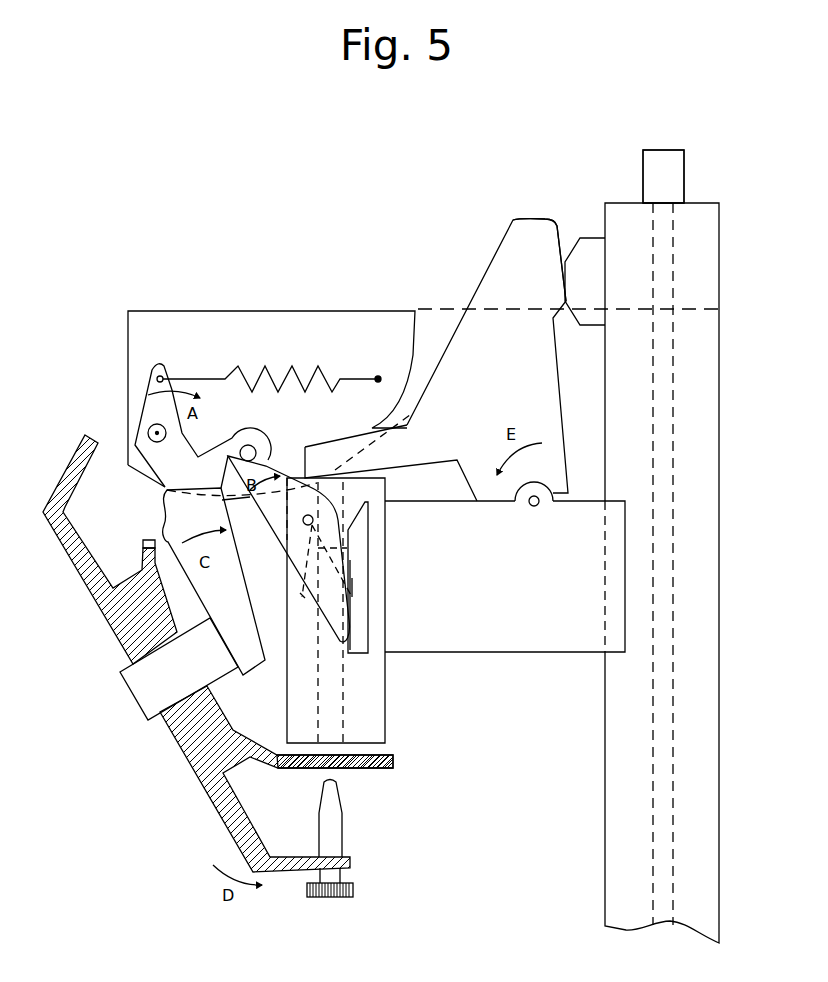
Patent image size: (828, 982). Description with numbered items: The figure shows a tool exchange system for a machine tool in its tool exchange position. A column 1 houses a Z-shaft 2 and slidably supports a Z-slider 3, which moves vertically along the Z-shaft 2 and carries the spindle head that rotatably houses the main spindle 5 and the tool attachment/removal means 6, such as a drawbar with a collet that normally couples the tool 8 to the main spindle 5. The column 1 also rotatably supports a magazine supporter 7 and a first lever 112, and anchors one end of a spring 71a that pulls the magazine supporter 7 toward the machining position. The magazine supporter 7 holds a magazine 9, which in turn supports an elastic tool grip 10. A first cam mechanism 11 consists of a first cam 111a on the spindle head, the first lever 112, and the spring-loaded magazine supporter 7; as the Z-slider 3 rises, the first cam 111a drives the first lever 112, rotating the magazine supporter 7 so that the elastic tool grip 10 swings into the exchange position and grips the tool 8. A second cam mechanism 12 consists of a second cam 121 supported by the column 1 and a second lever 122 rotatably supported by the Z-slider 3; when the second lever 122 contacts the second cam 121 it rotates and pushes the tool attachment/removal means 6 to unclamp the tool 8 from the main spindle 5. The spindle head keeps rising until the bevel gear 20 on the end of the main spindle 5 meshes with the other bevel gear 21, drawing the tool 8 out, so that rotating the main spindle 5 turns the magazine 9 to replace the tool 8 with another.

The column 1 is at (205, 323).
The Z-shaft 2 is at (672, 333).
The Z-slider 3 is at (570, 638).
The main spindle 5 is at (340, 712).
The tool attachment/removal means 6 is at (347, 559).
The magazine supporter 7 is at (185, 441).
The tool 8 is at (340, 838).
The magazine 9 is at (128, 648).
The elastic tool grip 10 is at (72, 462).
The first cam mechanism 11 is at (350, 516).
The second cam mechanism 12 is at (565, 316).
The bevel gear 20 is at (393, 757).
The bevel gear 21 is at (143, 540).
The spring 71a is at (277, 369).
The first cam 111a is at (363, 619).
The first lever 112 is at (272, 516).
The second cam 121 is at (586, 247).
The second lever 122 is at (527, 236).